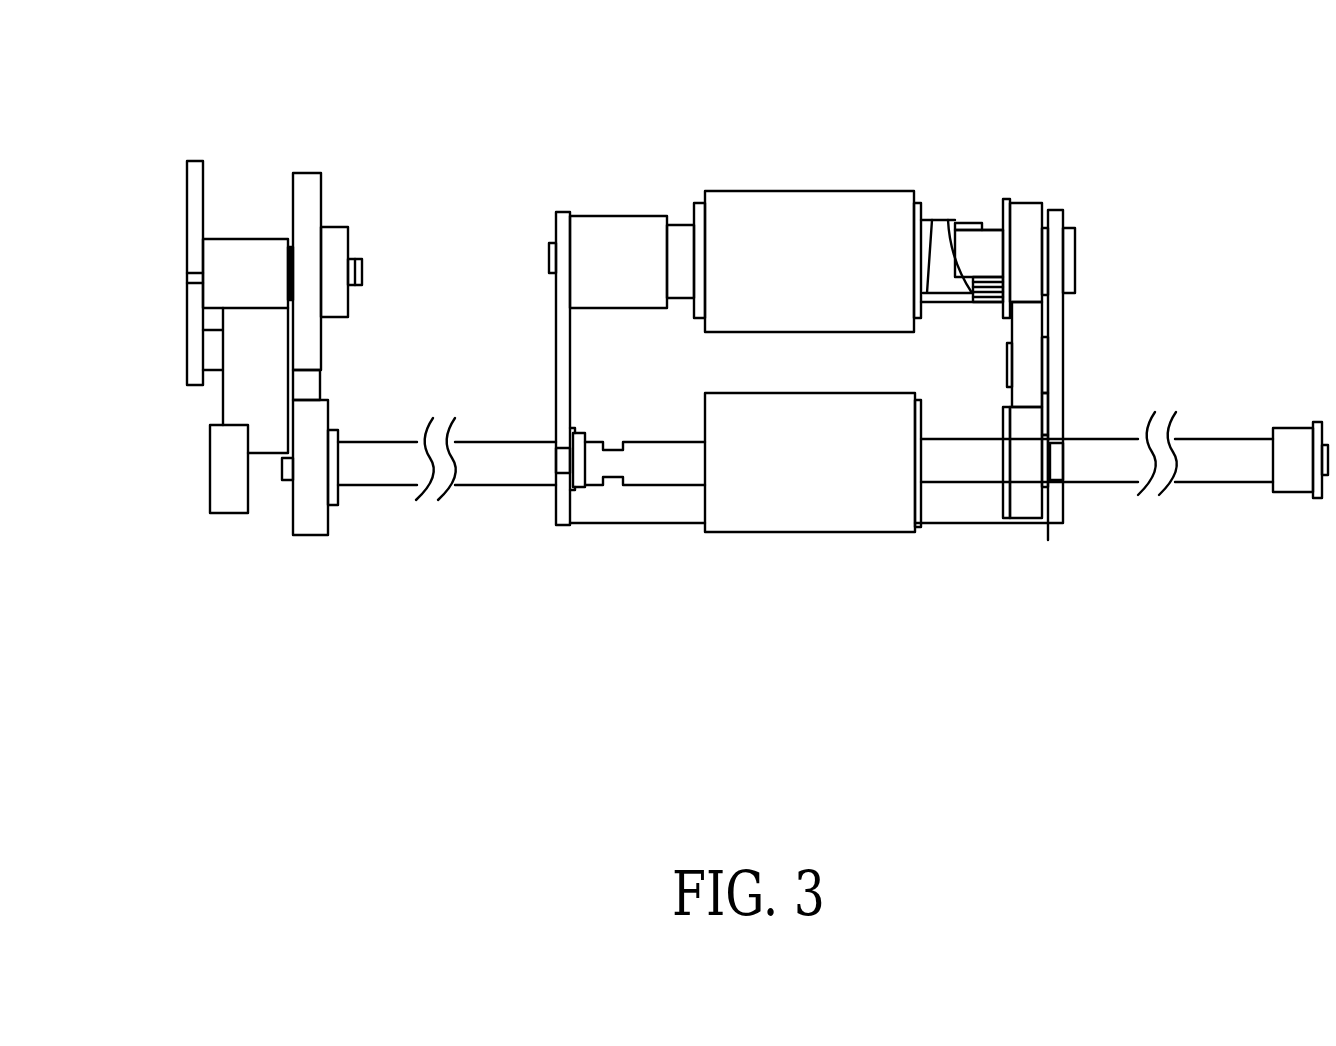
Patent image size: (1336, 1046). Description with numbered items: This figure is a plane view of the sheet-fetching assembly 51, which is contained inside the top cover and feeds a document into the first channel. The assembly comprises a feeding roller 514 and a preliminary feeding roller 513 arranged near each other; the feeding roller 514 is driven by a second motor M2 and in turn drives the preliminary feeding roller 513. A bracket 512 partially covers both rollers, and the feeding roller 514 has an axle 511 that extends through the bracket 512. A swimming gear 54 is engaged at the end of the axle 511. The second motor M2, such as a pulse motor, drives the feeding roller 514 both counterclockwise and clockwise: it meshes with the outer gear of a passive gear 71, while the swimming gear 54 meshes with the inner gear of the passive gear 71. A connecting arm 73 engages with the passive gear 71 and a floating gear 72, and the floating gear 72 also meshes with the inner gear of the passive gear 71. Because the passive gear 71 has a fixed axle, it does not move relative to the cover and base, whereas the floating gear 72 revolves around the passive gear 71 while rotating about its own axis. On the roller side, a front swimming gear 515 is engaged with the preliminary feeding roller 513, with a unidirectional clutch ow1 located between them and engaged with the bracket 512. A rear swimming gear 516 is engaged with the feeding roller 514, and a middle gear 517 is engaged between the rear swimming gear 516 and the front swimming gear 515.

The sheet-fetching assembly 51 is at (570, 212).
The axle 511 is at (508, 467).
The bracket 512 is at (555, 373).
The preliminary feeding roller 513 is at (790, 213).
The feeding roller 514 is at (820, 497).
The front swimming gear 515 is at (1025, 217).
The rear swimming gear 516 is at (1028, 493).
The middle gear 517 is at (1027, 362).
The unidirectional clutch ow1 is at (945, 230).
The swimming gear 54 is at (312, 515).
The passive gear 71 is at (252, 380).
The floating gear 72 is at (308, 203).
The connecting arm 73 is at (187, 247).
The second motor M2 is at (228, 487).